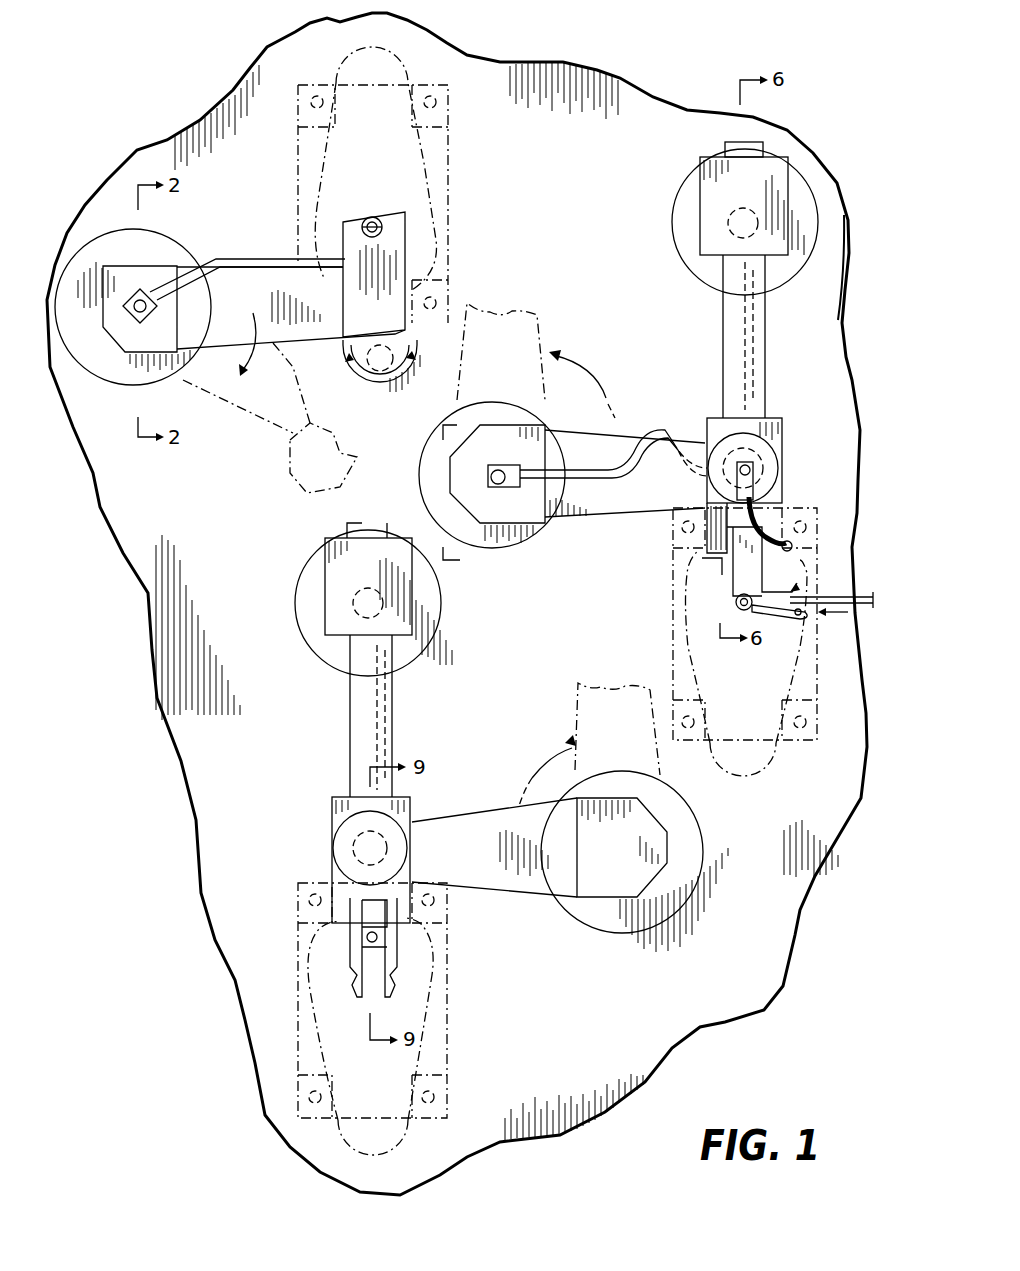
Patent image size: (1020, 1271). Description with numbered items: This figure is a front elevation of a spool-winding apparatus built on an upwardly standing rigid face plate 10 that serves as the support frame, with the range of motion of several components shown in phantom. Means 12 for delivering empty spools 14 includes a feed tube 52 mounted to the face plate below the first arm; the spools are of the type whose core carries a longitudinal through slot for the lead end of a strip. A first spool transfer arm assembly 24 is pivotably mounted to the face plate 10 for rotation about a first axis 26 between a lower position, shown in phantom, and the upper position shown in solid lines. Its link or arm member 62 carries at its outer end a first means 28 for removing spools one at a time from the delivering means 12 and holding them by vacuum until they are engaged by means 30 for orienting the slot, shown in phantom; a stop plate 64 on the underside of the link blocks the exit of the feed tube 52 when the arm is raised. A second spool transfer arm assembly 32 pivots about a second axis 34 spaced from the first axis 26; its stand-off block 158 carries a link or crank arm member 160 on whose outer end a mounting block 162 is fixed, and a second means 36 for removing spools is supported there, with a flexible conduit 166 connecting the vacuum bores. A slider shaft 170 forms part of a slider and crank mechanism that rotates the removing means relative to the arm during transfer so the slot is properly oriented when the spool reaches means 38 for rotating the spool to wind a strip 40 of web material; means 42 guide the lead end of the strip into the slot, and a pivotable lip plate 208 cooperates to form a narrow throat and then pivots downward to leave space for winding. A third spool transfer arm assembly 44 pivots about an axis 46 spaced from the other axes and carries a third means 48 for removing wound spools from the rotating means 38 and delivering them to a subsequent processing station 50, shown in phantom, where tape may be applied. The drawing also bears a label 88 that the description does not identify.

The face plate 10 is at (172, 641).
The first axis 26 is at (146, 298).
The rod 88 is at (260, 260).
The link or arm member 62 is at (223, 318).
The first means for removing spools 28 is at (397, 212).
The means for orienting slot 30 is at (430, 172).
The means for delivering empty spools 12 is at (413, 357).
The feed tube 52 is at (378, 385).
The stop plate 64 is at (344, 364).
The first spool transfer arm assembly 24 is at (262, 353).
The stand-off block 158 is at (505, 425).
The second axis 34 is at (492, 470).
The flexible conduit 166 is at (663, 430).
The link or crank arm member 160 is at (673, 503).
The second spool transfer arm assembly 32 is at (570, 520).
The slider shaft 170 is at (760, 360).
The mounting block 162 is at (782, 420).
The means for guiding strip lead end 42 is at (800, 590).
The strip 40 is at (865, 598).
The second means for removing spools 36 is at (732, 587).
The spool 14 is at (735, 606).
The means for rotating spool 38 is at (692, 660).
The pivotable lip plate 208 is at (786, 618).
The axis 46 is at (625, 849).
The third spool transfer arm assembly 44 is at (533, 893).
The third means for removing wound spools 48 is at (400, 918).
The processing station 50 is at (423, 1017).